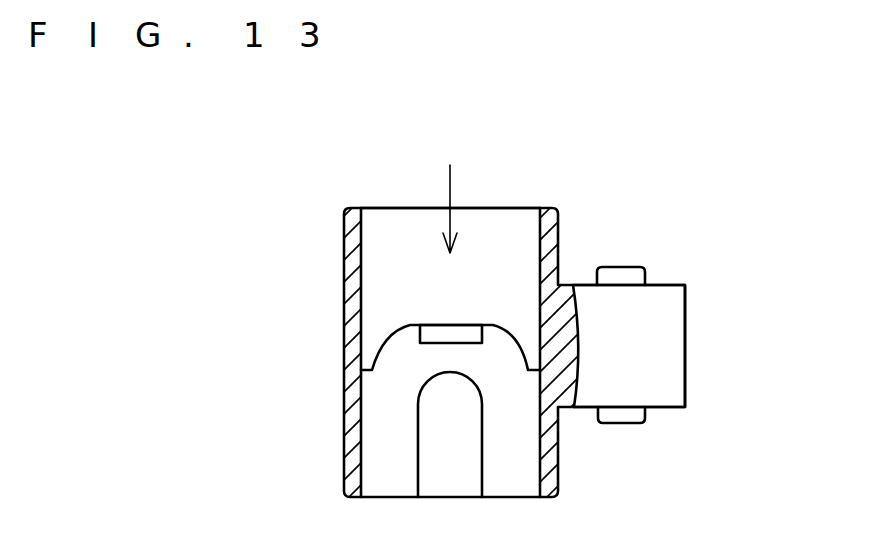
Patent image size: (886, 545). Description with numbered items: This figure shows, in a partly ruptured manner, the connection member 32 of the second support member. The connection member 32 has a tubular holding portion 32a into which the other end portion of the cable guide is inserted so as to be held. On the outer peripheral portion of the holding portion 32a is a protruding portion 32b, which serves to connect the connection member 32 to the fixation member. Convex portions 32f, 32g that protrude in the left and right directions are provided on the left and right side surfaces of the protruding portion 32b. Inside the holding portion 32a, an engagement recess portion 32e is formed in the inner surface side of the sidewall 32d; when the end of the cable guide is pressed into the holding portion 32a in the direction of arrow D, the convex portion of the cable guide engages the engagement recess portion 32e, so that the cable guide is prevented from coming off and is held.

The connection member 32 is at (213, 204).
The holding portion 32a is at (344, 420).
The protruding portion 32b is at (685, 334).
The lower sidewall 32d is at (393, 208).
The engagement recess portion 32e is at (430, 392).
The convex portion 32f is at (613, 267).
The convex portion 32g is at (622, 424).
The arrow D is at (450, 190).